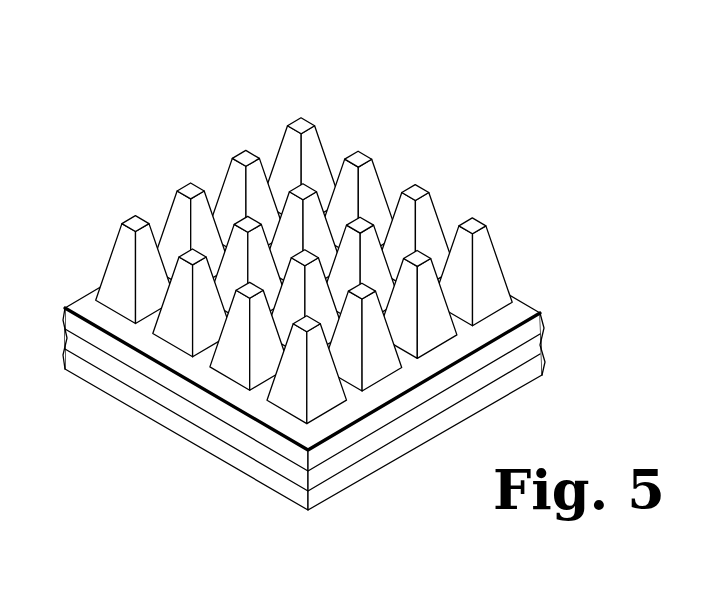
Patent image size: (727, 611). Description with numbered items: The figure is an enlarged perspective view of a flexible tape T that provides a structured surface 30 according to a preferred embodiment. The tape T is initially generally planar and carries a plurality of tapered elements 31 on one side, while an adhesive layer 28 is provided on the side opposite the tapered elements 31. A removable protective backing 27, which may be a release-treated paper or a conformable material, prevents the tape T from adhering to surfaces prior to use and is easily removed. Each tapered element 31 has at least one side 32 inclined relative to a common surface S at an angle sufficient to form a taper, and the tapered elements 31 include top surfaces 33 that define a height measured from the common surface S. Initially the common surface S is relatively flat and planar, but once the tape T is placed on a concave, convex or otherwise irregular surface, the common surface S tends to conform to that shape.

The removable protective backing 27 is at (300, 424).
The adhesive layer 28 is at (288, 467).
The structured surface 30 is at (321, 225).
The tapered elements 31 is at (497, 305).
The inclined side 32 is at (423, 205).
The top surfaces 33 is at (365, 149).
The flexible tape T is at (297, 225).
The common surface S is at (350, 407).